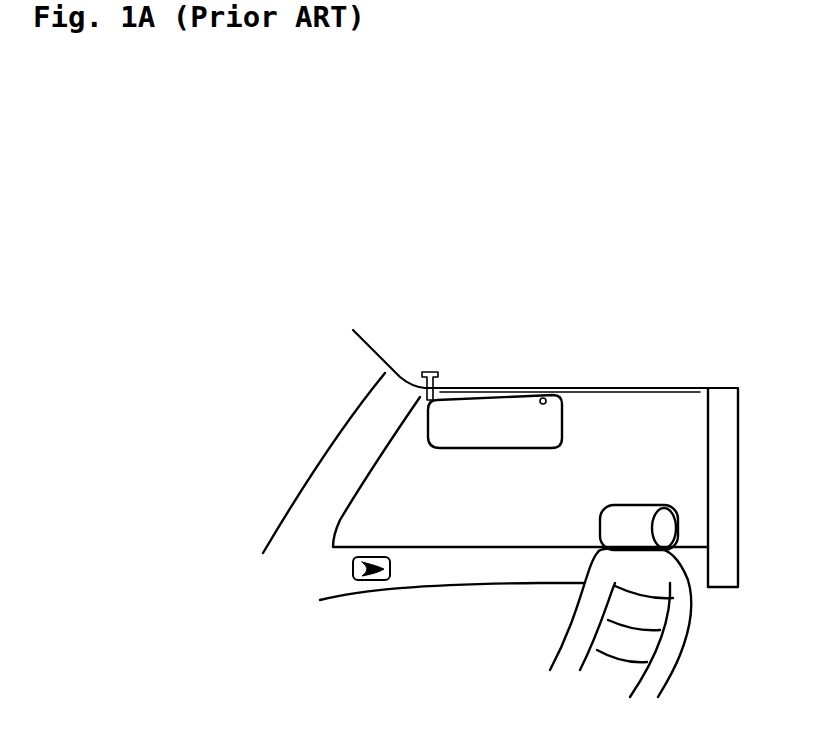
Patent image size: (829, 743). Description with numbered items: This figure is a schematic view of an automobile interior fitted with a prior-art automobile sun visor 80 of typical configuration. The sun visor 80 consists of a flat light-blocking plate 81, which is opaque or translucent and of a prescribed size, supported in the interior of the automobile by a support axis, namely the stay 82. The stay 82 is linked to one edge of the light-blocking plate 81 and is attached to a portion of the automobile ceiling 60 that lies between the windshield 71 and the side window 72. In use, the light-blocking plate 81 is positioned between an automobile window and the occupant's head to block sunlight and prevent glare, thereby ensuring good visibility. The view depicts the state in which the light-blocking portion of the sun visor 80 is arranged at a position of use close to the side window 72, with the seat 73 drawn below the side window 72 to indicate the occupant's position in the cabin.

The automobile ceiling 60 is at (533, 295).
The windshield 71 is at (278, 357).
The side window 72 is at (655, 413).
The seat 73 is at (678, 637).
The automobile sun visor 80 is at (452, 182).
The light-blocking plate 81 is at (478, 416).
The stay 82 is at (430, 388).